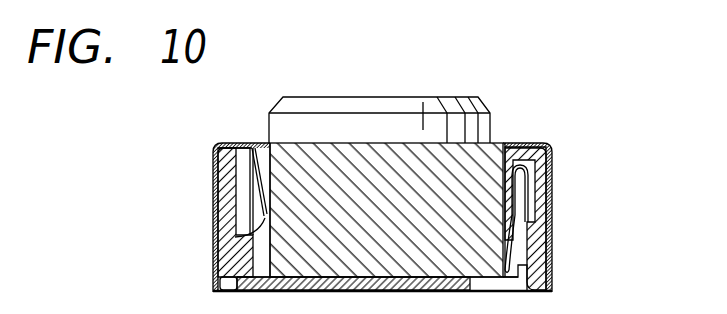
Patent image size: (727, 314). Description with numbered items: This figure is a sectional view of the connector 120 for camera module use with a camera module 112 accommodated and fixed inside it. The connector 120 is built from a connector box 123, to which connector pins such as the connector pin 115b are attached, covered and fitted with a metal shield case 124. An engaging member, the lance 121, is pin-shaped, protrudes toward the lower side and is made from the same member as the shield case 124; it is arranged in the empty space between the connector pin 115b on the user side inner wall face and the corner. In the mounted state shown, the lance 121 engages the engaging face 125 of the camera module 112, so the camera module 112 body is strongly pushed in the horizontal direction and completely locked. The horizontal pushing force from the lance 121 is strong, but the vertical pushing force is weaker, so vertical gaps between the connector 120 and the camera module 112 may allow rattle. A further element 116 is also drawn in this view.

The connector for camera module use 120 is at (365, 80).
The camera module 112 is at (478, 107).
The shield case 124 is at (228, 147).
The connector box 123 is at (213, 263).
The engaging member (lance) 121 is at (250, 175).
The engaging face 125 is at (235, 237).
The contact spring 116 is at (510, 258).
The connector pin 115b is at (520, 268).